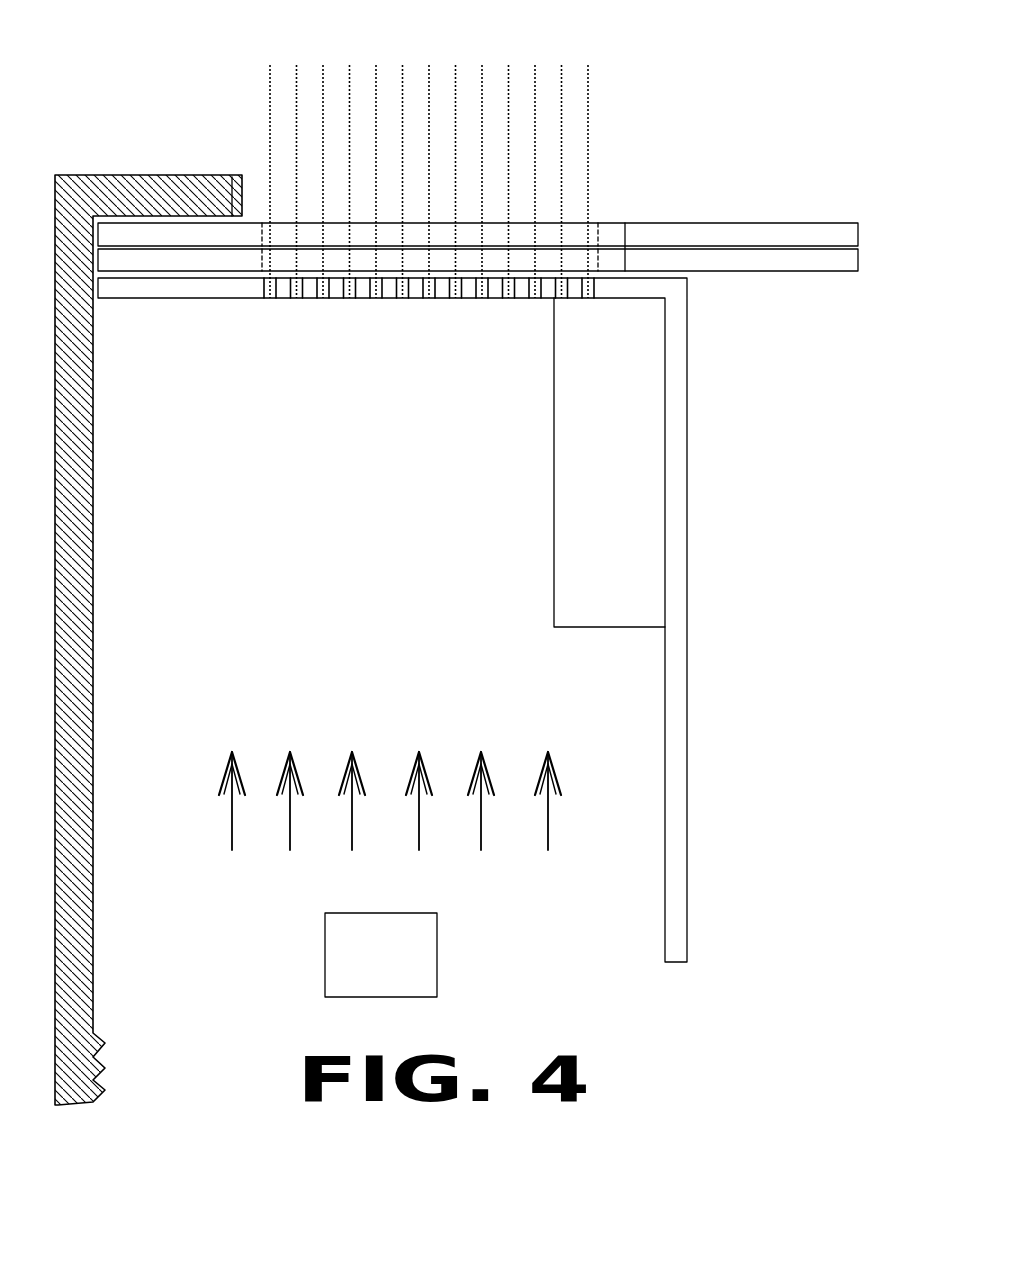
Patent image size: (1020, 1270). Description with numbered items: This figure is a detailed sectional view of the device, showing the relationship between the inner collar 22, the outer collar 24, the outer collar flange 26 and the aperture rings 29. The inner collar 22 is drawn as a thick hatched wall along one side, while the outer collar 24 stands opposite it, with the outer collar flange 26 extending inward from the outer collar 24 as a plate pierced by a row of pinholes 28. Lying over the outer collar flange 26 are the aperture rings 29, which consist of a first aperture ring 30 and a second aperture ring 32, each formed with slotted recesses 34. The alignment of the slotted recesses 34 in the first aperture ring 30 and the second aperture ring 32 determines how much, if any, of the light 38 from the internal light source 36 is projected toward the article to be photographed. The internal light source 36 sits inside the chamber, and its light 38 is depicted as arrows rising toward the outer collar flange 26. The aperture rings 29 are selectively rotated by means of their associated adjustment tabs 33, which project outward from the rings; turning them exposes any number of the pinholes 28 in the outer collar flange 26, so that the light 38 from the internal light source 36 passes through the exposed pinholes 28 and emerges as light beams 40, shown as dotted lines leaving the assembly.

The inner collar 22 is at (93, 390).
The outer collar 24 is at (666, 938).
The outer collar flange 26 is at (217, 298).
The pinholes 28 is at (295, 298).
The aperture rings 29 is at (253, 248).
The first aperture ring 30 is at (126, 248).
The second aperture ring 32 is at (165, 223).
The adjustment tabs 33 is at (770, 252).
The slotted recesses 34 is at (523, 260).
The internal light source 36 is at (355, 957).
The light 38 is at (481, 762).
The light beams 40 is at (606, 112).